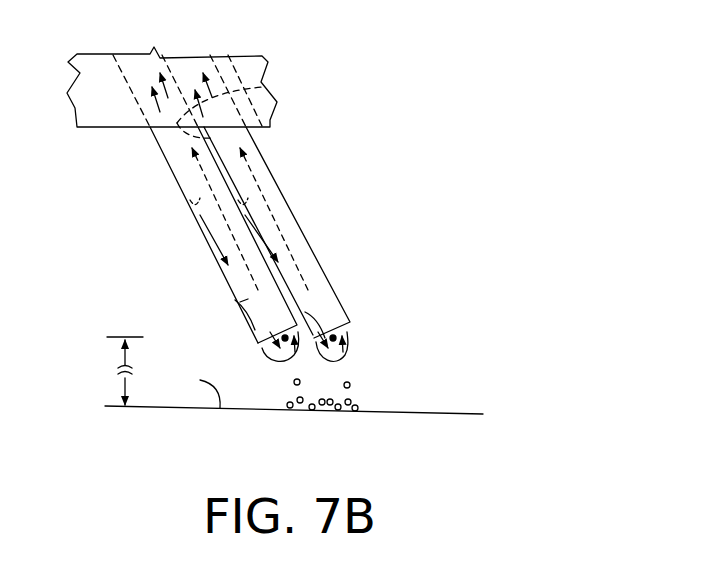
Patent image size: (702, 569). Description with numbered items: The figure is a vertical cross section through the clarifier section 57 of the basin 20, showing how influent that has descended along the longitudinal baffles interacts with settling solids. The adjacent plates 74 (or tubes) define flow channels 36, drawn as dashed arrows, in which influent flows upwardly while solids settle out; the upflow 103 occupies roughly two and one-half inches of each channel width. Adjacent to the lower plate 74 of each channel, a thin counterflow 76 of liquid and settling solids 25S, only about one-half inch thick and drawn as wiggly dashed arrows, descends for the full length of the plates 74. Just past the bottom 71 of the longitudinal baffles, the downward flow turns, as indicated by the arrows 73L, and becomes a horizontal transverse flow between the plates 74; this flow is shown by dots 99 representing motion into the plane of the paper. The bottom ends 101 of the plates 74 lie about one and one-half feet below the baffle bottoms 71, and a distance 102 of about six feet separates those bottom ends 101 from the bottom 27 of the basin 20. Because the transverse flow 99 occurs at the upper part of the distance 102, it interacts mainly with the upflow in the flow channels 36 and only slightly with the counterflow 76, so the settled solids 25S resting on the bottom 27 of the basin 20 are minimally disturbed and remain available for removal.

The basin 20 is at (453, 408).
The settling solids 25S is at (310, 410).
The bottom of the basin 27 is at (195, 389).
The flow channels 36 is at (200, 225).
The clarifier section 57 is at (104, 166).
The bottom of the baffles 71 is at (267, 128).
The arrows showing turned flow 73L is at (250, 325).
The plates 74 is at (263, 88).
The counterflow 76 is at (212, 255).
The transverse horizontal flow 99 is at (337, 352).
The bottom ends of the plates 101 is at (305, 340).
The distance 102 is at (120, 373).
The upflow 103 is at (162, 110).